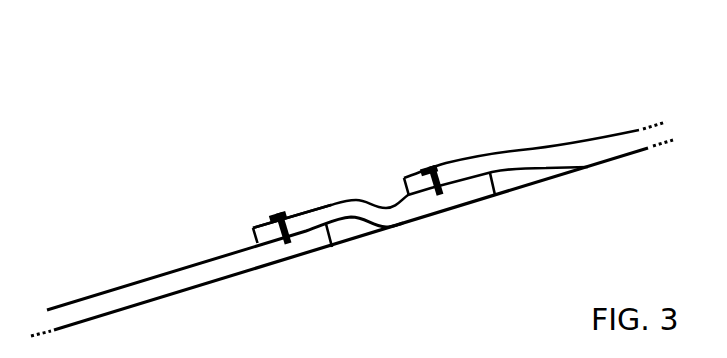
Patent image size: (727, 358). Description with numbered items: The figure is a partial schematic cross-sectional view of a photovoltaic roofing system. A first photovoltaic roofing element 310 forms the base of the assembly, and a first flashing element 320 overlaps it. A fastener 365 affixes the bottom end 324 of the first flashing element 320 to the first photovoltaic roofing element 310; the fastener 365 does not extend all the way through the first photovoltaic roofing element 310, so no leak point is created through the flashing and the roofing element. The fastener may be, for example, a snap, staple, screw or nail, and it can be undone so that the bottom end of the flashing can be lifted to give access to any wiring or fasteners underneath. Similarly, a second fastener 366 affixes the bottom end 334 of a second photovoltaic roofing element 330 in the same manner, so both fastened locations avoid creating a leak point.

The first photovoltaic roofing element 310 is at (163, 215).
The first flashing element 320 is at (323, 155).
The bottom end of the first flashing element 324 is at (268, 182).
The bottom end of the second photovoltaic roofing element 334 is at (432, 132).
The second photovoltaic roofing element 330 is at (549, 92).
The fastener 365 is at (276, 216).
The fastener 366 is at (426, 168).